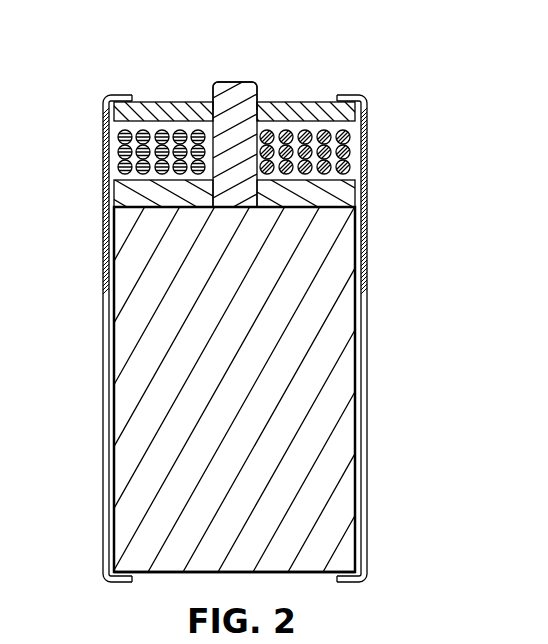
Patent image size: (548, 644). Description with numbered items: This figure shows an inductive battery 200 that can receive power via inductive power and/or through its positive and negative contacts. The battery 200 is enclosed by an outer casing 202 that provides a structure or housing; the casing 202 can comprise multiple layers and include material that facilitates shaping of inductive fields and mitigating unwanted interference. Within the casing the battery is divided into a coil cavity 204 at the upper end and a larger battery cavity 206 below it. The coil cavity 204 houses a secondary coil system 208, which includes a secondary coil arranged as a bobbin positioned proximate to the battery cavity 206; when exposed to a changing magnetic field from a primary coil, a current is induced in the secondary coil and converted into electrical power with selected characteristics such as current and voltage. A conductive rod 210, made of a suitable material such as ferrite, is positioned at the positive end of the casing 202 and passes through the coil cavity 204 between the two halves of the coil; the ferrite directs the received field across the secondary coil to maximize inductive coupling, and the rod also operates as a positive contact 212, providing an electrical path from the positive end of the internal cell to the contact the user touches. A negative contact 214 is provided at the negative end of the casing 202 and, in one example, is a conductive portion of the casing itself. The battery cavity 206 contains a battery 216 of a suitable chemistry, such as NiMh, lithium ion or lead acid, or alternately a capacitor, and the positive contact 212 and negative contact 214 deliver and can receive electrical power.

The inductive battery 200 is at (442, 186).
The outer casing 202 is at (266, 363).
The coil cavity 204 is at (87, 93).
The battery cavity 206 is at (87, 583).
The secondary coil system 208 is at (347, 136).
The conductive rod 210 is at (232, 122).
The positive contact 212 is at (238, 82).
The negative contact 214 is at (302, 573).
The battery 216 is at (312, 359).